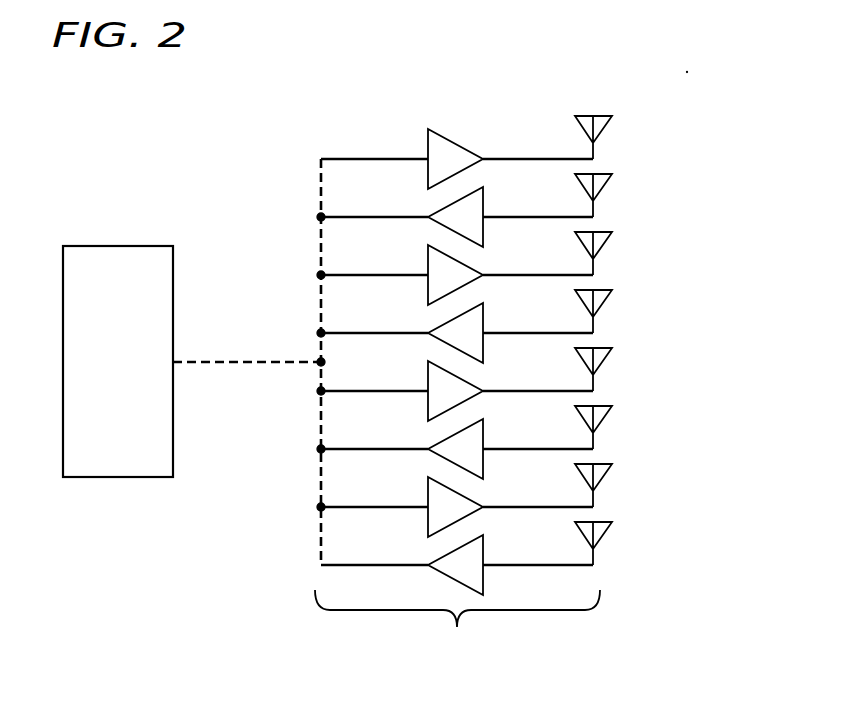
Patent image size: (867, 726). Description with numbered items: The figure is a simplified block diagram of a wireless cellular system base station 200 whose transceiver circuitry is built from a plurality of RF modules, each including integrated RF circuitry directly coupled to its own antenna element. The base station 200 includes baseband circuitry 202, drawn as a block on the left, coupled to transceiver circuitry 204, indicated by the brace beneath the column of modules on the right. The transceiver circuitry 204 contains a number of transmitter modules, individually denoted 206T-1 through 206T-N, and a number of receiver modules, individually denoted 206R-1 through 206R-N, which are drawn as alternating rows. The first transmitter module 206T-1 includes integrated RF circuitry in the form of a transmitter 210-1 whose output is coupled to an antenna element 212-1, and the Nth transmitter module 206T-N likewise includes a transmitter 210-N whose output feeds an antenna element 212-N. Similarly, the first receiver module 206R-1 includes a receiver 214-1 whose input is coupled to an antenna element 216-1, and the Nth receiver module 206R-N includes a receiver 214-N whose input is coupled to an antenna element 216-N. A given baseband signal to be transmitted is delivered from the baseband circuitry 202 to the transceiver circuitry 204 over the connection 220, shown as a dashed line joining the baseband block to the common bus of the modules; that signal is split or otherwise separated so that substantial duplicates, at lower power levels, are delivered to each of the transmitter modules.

The wireless cellular system base station 200 is at (685, 73).
The baseband circuitry 202 is at (120, 246).
The transceiver circuitry 204 is at (457, 625).
The transmitter module 206T-1 is at (405, 142).
The receiver module 206R-1 is at (305, 185).
The transmitter module 206T-N is at (622, 510).
The receiver module 206R-N is at (622, 565).
The transmitter 210-1 is at (447, 138).
The transmitter 210-N is at (426, 484).
The antenna element 212-1 is at (605, 135).
The antenna element 212-N is at (610, 470).
The receiver 214-1 is at (450, 205).
The receiver 214-N is at (485, 549).
The antenna element 216-1 is at (605, 193).
The antenna element 216-N is at (610, 528).
The connection 220 is at (240, 362).